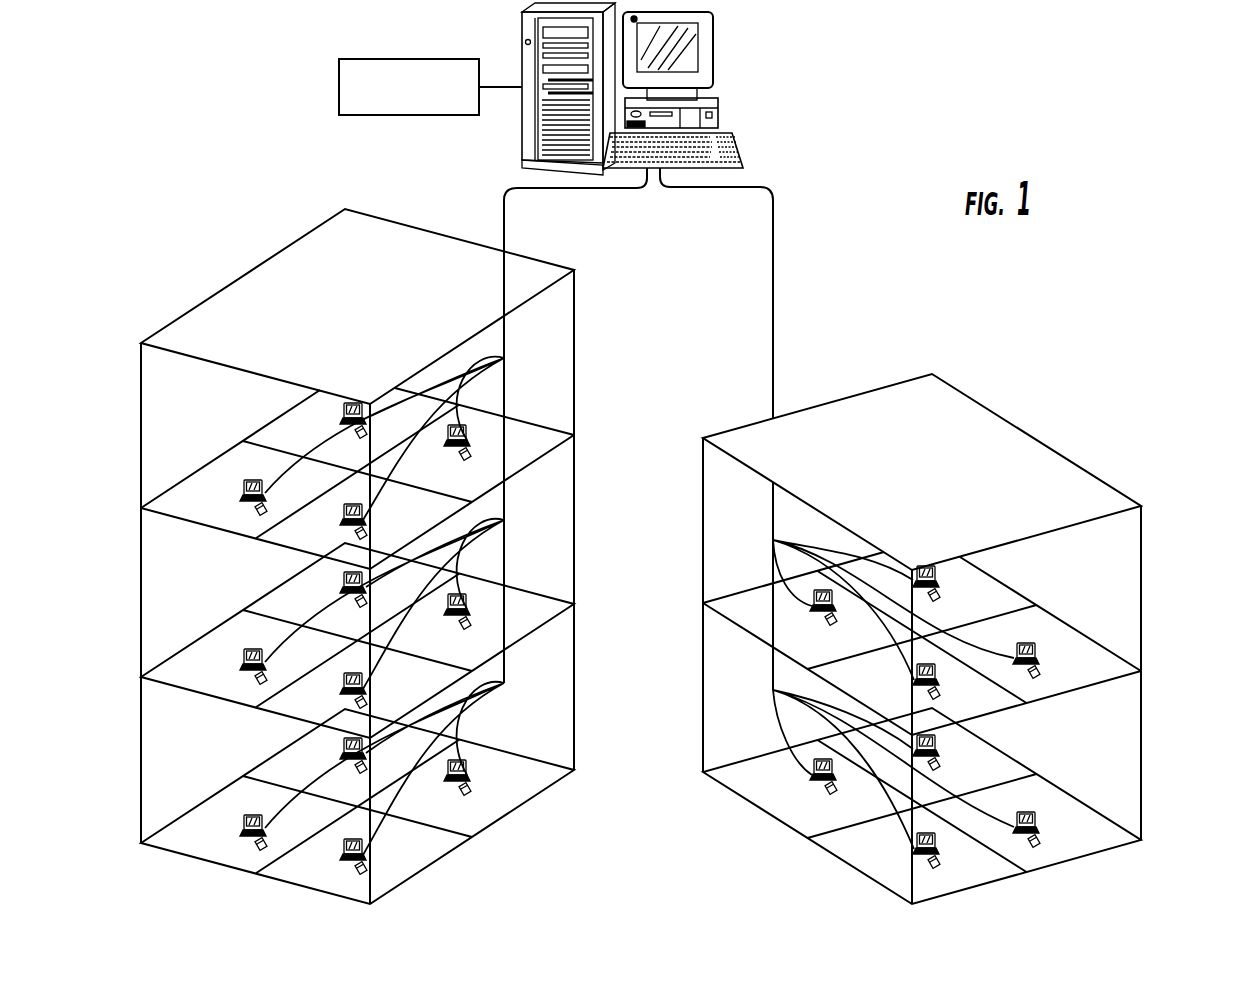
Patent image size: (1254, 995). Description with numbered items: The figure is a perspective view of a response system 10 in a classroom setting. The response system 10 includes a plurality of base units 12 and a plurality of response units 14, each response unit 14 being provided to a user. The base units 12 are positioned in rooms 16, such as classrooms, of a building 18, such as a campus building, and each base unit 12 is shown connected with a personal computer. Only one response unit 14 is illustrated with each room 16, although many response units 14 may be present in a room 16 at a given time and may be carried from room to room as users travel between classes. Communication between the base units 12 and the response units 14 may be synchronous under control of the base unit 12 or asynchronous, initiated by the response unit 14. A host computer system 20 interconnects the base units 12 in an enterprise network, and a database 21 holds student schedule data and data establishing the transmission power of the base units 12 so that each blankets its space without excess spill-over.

The response system 10 is at (815, 166).
The base unit 12 is at (1037, 644).
The response unit 14 is at (1032, 680).
The room 16 is at (1138, 797).
The building 18 is at (1053, 450).
The host computer system 20 is at (717, 97).
The database 21 is at (437, 59).